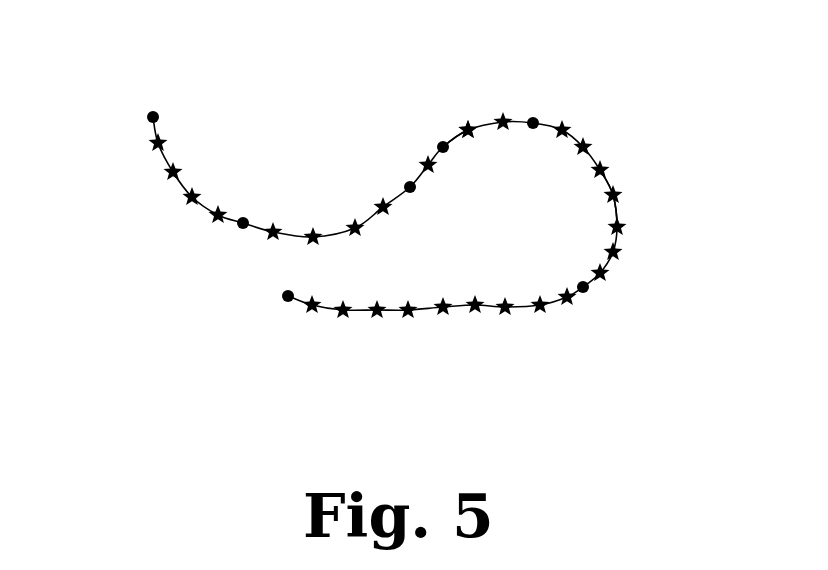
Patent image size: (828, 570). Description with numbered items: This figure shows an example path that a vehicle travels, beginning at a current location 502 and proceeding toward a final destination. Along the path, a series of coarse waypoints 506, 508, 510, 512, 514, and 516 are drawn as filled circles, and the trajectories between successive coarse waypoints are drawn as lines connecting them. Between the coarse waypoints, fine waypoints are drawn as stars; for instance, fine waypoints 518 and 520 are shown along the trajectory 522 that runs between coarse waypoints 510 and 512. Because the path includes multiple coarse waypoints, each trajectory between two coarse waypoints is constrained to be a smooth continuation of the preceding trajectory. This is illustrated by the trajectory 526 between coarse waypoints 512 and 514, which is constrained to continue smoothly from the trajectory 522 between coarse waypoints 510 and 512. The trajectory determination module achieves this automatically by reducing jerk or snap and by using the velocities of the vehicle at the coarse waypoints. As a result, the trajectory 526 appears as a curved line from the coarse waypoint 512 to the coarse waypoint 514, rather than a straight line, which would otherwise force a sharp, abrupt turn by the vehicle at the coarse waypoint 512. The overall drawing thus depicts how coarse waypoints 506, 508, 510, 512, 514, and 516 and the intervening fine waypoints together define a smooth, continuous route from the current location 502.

The current location 502 is at (150, 113).
The coarse waypoint 506 is at (237, 228).
The coarse waypoint 508 is at (403, 183).
The coarse waypoint 510 is at (439, 143).
The coarse waypoint 512 is at (537, 118).
The coarse waypoint 514 is at (587, 290).
The coarse waypoint 516 is at (280, 303).
The fine waypoint 518 is at (465, 127).
The fine waypoint 520 is at (500, 117).
The trajectory 522 is at (455, 140).
The trajectory 526 is at (618, 208).